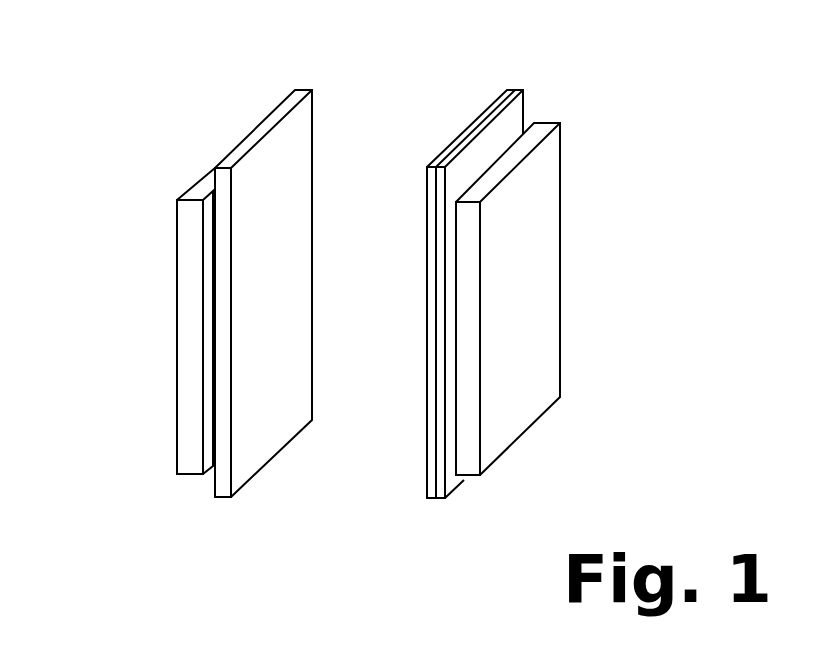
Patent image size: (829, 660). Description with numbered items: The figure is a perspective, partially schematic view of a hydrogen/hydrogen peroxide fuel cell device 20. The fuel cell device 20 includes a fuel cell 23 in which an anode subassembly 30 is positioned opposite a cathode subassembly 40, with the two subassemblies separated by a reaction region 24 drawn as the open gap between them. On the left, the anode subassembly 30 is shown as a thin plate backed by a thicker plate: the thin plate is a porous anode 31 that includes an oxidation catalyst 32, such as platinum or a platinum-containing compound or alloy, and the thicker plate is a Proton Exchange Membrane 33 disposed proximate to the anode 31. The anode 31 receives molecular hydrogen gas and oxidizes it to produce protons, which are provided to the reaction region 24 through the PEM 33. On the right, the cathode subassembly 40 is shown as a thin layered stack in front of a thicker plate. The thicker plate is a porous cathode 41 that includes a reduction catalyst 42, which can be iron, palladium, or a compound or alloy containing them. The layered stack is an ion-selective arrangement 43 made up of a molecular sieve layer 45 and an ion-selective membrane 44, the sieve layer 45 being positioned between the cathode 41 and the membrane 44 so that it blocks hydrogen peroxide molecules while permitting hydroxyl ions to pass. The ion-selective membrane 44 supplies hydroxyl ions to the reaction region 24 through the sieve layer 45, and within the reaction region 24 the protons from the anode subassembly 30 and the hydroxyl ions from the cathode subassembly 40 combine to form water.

The fuel cell device 20 is at (143, 99).
The fuel cell 23 is at (641, 119).
The reaction region 24 is at (373, 305).
The anode subassembly 30 is at (215, 550).
The porous anode 31 is at (188, 267).
The oxidation catalyst 32 is at (188, 409).
The Proton Exchange Membrane 33 is at (257, 437).
The cathode subassembly 40 is at (490, 552).
The porous cathode 41 is at (532, 238).
The reduction catalyst 42 is at (527, 372).
The ion-selective arrangement 43 is at (427, 480).
The ion-selective membrane 44 is at (458, 138).
The molecular sieve layer 45 is at (500, 140).